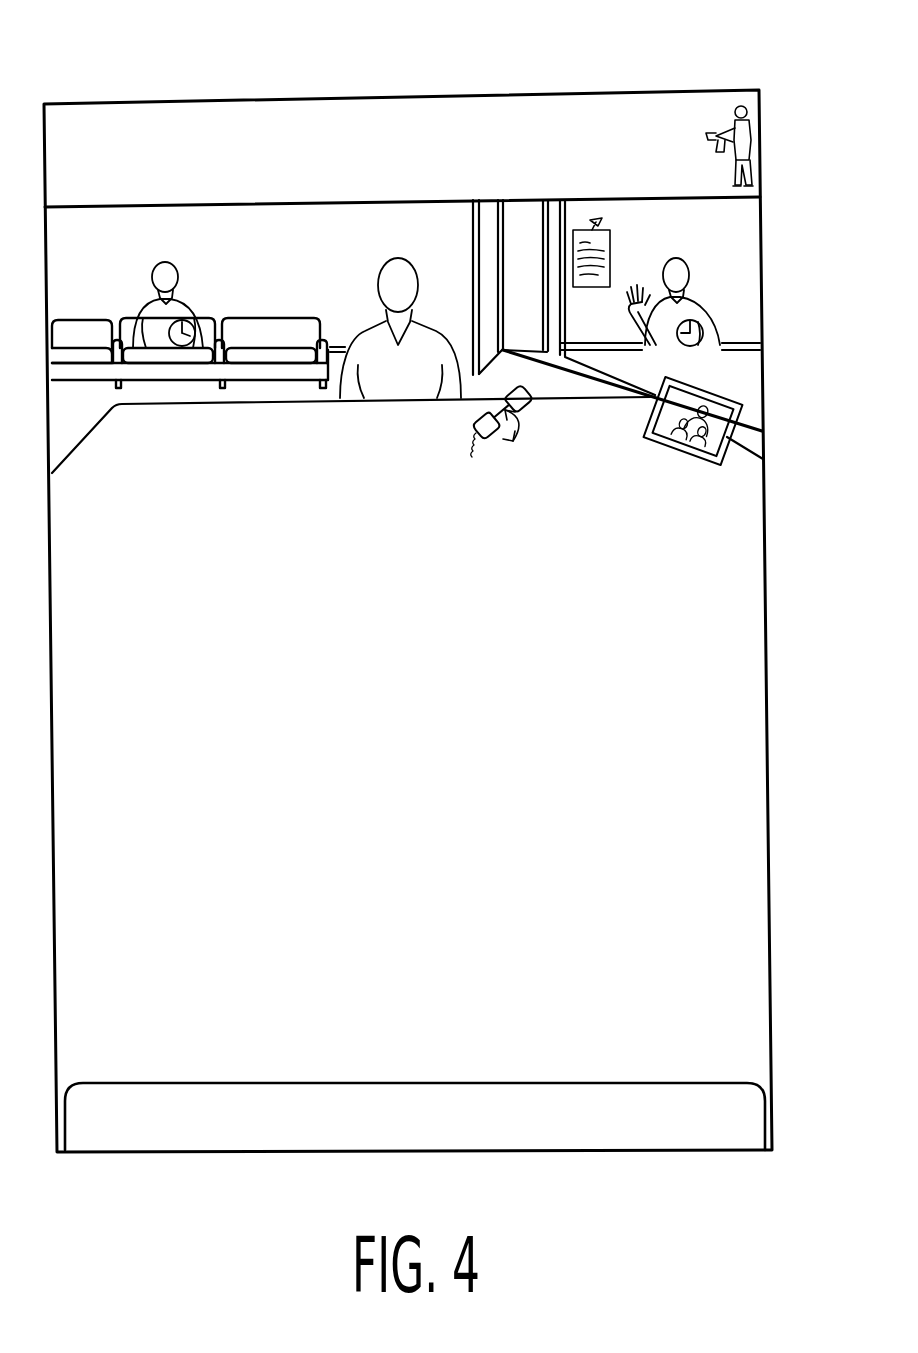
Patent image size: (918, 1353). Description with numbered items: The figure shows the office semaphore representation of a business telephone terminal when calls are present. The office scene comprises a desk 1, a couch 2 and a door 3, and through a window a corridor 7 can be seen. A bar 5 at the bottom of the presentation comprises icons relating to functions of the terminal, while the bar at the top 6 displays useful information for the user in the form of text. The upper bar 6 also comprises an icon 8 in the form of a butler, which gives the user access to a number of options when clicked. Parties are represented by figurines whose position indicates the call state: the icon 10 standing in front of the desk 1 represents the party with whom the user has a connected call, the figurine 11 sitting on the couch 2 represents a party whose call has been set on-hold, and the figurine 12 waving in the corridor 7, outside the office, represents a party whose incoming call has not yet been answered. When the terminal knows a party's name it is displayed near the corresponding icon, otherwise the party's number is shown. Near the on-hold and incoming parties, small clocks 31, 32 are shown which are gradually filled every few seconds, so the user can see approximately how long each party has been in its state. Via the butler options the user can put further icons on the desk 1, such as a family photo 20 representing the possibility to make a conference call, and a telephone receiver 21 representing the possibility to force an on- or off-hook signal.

The desk 1 is at (762, 526).
The couch 2 is at (290, 330).
The door 3 is at (482, 239).
The bar 5 is at (748, 1119).
The bar at the top 6 is at (564, 103).
The corridor 7 is at (757, 258).
The icon in the form of a butler 8 is at (741, 100).
The icon 10 is at (378, 275).
The figurine 11 is at (152, 290).
The figurine 12 is at (690, 266).
The family photo 20 is at (703, 386).
The telephone receiver 21 is at (470, 420).
The small clock 31 is at (205, 318).
The small clock 32 is at (713, 330).